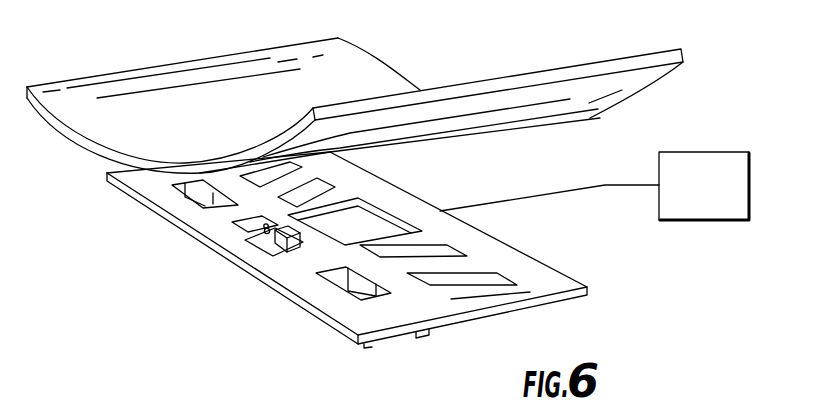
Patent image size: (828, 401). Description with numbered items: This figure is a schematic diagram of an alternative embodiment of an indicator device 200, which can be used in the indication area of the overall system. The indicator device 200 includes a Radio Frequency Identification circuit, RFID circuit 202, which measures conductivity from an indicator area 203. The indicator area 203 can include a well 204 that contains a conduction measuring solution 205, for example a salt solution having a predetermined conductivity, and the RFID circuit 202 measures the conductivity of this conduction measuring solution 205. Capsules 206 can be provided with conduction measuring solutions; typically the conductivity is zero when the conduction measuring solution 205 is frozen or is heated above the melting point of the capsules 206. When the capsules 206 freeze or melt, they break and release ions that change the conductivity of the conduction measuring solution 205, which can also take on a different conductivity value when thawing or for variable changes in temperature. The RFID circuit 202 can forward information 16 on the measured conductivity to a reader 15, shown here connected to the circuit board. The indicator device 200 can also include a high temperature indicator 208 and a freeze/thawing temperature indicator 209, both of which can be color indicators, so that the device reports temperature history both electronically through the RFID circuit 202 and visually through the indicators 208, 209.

The indicator device 200 is at (241, 30).
The RFID circuit 202 is at (458, 249).
The information 16 is at (393, 213).
The high temperature indicator 208 is at (183, 192).
The freeze/thawing temperature indicator 209 is at (343, 293).
The capsules 206 is at (232, 225).
The conduction measuring solution 205 is at (270, 240).
The indicator area 203 is at (275, 246).
The well 204 is at (255, 246).
The reader 15 is at (695, 152).